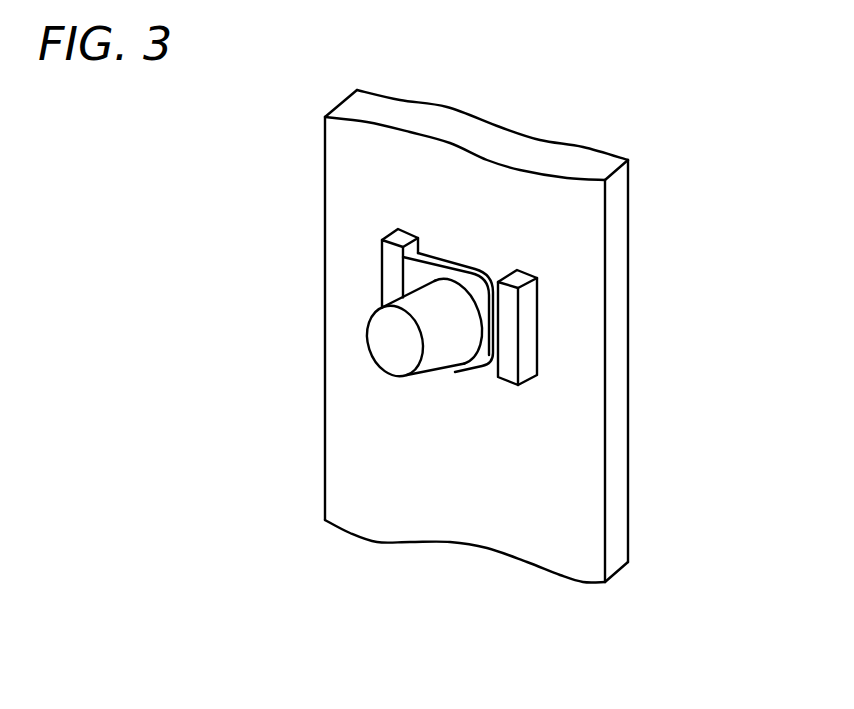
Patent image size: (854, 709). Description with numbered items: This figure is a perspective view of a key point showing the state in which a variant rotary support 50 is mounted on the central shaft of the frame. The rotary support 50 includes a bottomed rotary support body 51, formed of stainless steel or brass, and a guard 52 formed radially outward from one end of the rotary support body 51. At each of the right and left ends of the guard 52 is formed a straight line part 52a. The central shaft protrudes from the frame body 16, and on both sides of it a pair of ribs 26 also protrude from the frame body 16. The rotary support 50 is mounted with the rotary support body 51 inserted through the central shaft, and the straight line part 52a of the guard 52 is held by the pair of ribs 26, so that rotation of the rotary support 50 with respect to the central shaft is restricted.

The frame body 16 is at (560, 553).
The rib 26 is at (390, 255).
The rotary support 50 is at (384, 339).
The rotary support body 51 is at (433, 347).
The guard 52 is at (448, 272).
The straight line part 52a is at (390, 282).